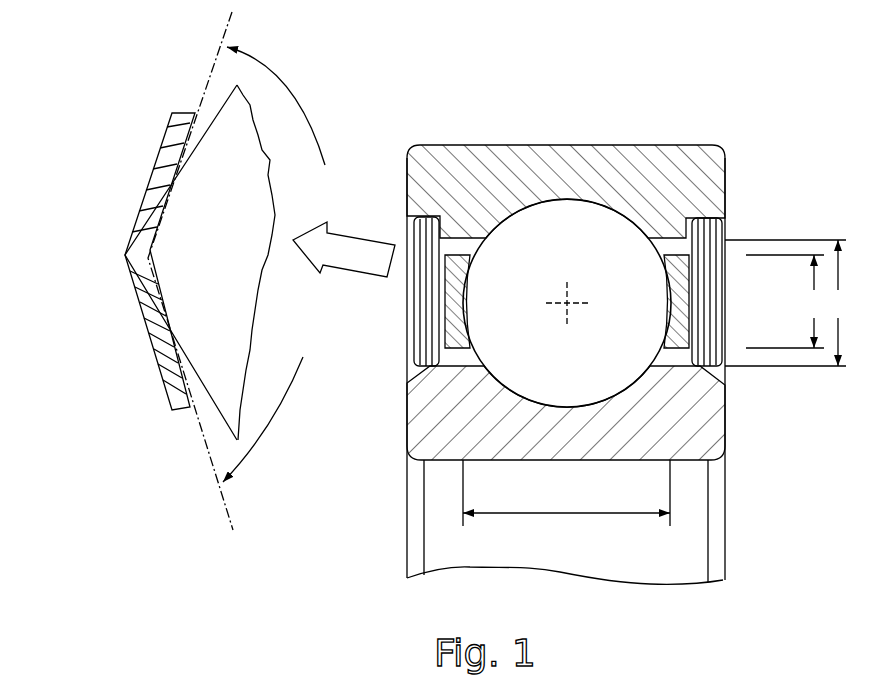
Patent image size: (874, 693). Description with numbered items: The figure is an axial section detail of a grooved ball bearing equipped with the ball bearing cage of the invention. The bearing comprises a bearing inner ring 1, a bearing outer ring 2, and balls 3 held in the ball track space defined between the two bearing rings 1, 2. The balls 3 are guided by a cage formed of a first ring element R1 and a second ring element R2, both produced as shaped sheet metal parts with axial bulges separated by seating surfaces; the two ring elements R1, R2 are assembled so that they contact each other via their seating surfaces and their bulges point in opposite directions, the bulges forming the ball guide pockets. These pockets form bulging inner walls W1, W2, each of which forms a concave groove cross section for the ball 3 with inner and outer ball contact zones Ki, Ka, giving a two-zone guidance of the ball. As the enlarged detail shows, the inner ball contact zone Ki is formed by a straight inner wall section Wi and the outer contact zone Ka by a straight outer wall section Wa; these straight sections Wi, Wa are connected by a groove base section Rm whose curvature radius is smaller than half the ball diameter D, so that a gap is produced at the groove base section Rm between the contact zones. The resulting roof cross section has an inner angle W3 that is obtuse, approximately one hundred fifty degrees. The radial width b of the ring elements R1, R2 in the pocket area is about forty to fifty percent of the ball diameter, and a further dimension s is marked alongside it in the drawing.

The bearing inner ring 1 is at (717, 426).
The bearing outer ring 2 is at (722, 178).
The ball 3 is at (577, 215).
The first ring element R1 is at (447, 283).
The second ring element R2 is at (687, 285).
The groove base section Rm is at (447, 314).
The outer ball contact zone Ka is at (472, 287).
The inner ball contact zone Ki is at (469, 351).
The straight outer wall section Wa is at (471, 259).
The straight inner wall section Wi is at (477, 347).
The bulging inner wall W1 is at (446, 306).
The bulging inner wall W2 is at (688, 306).
The inner angle W3 is at (274, 264).
The ball diameter D is at (566, 493).
The radial width b is at (785, 301).
The gap width s is at (785, 303).